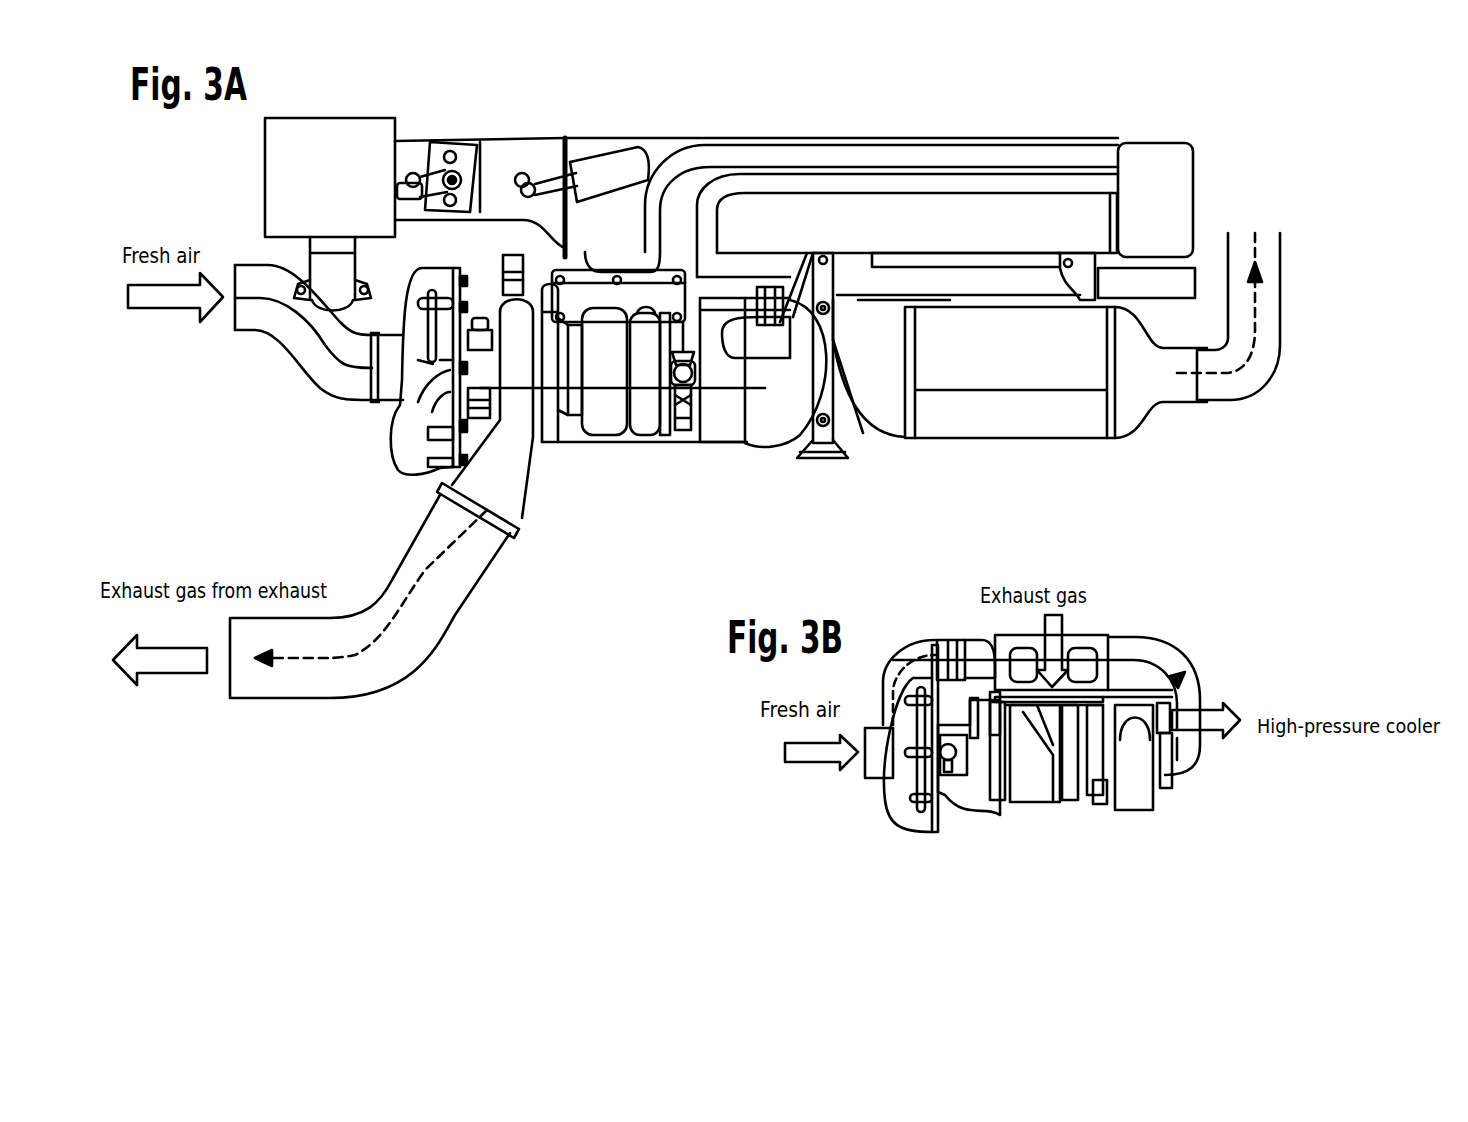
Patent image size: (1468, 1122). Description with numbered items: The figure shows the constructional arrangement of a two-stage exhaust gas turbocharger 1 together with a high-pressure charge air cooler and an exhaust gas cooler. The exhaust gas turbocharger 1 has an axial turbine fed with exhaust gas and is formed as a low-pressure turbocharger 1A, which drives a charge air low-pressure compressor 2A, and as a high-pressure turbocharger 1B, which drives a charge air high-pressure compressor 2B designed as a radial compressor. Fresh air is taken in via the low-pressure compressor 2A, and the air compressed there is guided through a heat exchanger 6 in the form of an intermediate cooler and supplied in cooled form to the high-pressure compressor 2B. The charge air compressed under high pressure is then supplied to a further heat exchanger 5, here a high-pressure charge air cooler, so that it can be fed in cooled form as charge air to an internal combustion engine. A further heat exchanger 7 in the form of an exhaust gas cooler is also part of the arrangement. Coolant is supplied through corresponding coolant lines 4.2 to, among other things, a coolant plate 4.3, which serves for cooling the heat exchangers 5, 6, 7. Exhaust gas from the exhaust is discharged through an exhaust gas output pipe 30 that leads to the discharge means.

In FIG. 3A, the exhaust gas turbocharger 1 is at (623, 417).
In FIG. 3B, the exhaust gas turbocharger 1 is at (1043, 799).
In FIG. 3A, the low-pressure turbocharger 1A is at (607, 427).
In FIG. 3B, the low-pressure turbocharger 1A is at (1042, 797).
In FIG. 3A, the high-pressure turbocharger 1B is at (643, 427).
In FIG. 3B, the high-pressure turbocharger 1B is at (1070, 797).
In FIG. 3A, the charge air low-pressure compressor 2A is at (423, 473).
In FIG. 3B, the charge air low-pressure compressor 2A is at (897, 812).
In FIG. 3A, the charge air high-pressure compressor 2B is at (727, 427).
In FIG. 3B, the charge air high-pressure compressor 2B is at (1130, 800).
In FIG. 3A, the coolant lines 4.2 is at (870, 170).
In FIG. 3A, the coolant plate 4.3 is at (975, 278).
In FIG. 3A, the heat exchanger 5 is at (995, 425).
In FIG. 3A, the heat exchanger 6 is at (673, 440).
In FIG. 3B, the heat exchanger 6 is at (1100, 650).
In FIG. 3A, the heat exchanger 7 is at (657, 157).
In FIG. 3A, the exhaust gas output pipe 30 is at (458, 595).